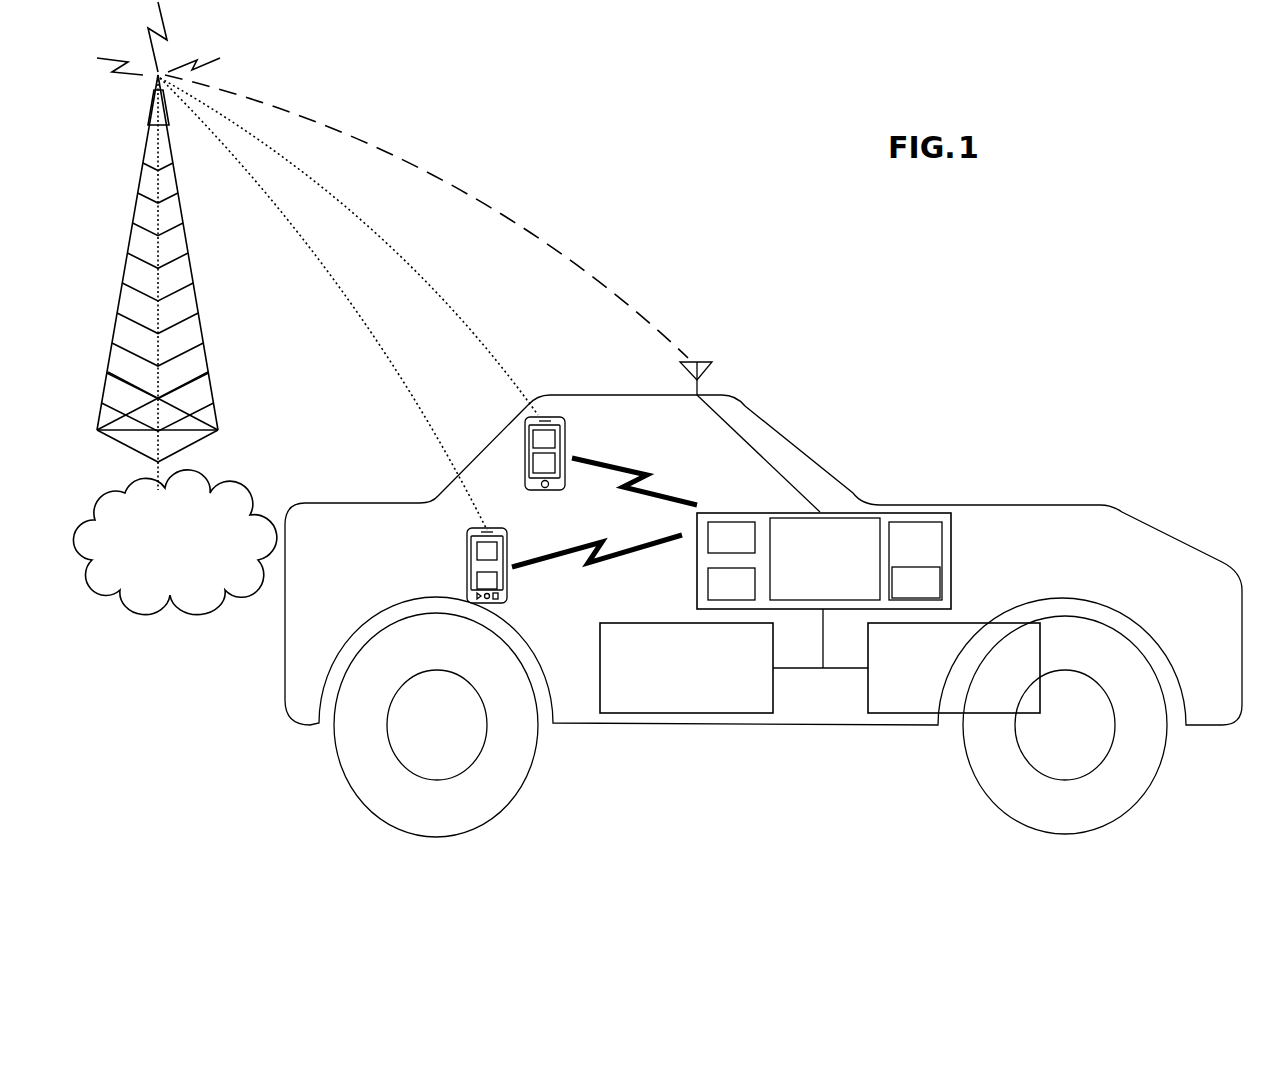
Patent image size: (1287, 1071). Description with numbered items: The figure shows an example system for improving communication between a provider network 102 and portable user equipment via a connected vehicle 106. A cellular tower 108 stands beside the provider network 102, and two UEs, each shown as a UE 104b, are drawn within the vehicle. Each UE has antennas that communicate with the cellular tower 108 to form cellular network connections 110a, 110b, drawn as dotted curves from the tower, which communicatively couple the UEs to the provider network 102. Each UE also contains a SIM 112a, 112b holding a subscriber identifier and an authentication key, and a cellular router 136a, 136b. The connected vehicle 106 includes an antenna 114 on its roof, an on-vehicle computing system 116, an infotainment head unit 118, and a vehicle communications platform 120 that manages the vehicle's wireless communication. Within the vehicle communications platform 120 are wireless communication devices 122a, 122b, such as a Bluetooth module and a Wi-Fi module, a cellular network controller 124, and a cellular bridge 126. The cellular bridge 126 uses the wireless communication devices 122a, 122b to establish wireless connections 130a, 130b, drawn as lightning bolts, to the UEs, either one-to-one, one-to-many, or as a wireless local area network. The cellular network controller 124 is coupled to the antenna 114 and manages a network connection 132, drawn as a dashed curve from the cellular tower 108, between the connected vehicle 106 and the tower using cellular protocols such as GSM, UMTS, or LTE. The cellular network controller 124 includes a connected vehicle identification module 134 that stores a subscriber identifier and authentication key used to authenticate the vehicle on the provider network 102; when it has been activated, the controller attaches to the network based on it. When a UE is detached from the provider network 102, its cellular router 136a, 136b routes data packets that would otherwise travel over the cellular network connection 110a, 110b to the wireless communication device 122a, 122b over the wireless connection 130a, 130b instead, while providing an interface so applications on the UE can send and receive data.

The provider network 102 is at (162, 568).
The UE 104b is at (518, 509).
The connected vehicle 106 is at (763, 616).
The cellular tower 108 is at (183, 246).
The cellular network connection 110a is at (349, 246).
The cellular network connection 110b is at (323, 304).
The SIM 112a is at (477, 578).
The SIM 112b is at (535, 470).
The antenna 114 is at (732, 366).
The on-vehicle computing system 116 is at (939, 709).
The infotainment head unit 118 is at (672, 696).
The vehicle communications platform 120 is at (860, 561).
The wireless communication device 122a is at (712, 546).
The wireless communication device 122b is at (712, 593).
The cellular network controller 124 is at (900, 549).
The cellular bridge 126 is at (810, 588).
The wireless connection 130a is at (597, 543).
The wireless connection 130b is at (643, 476).
The network connection 132 is at (426, 216).
The connected vehicle identification module 134 is at (900, 592).
The cellular router 136a is at (477, 550).
The cellular router 136b is at (537, 433).